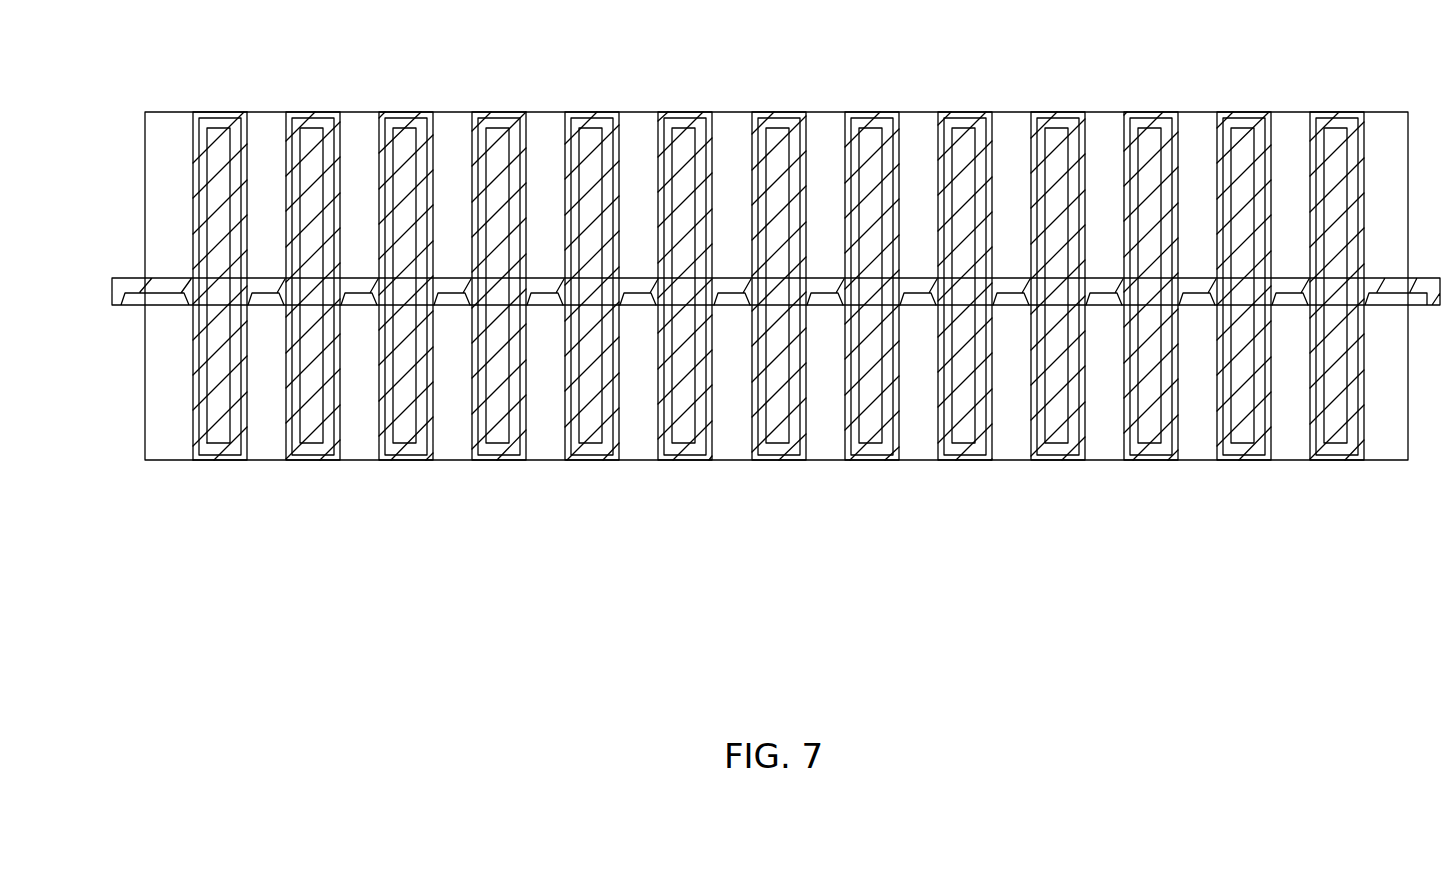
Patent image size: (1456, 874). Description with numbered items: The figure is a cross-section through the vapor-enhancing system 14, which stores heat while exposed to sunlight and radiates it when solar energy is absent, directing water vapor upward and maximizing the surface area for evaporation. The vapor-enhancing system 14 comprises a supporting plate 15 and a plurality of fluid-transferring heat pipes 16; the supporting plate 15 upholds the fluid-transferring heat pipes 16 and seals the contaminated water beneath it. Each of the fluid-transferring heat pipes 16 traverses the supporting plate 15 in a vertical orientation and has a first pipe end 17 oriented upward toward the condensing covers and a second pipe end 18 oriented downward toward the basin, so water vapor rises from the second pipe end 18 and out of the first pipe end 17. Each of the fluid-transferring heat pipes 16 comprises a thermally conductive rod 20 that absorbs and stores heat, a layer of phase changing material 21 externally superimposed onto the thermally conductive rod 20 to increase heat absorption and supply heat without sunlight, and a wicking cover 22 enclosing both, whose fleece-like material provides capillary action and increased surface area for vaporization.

The vapor-enhancing system 14 is at (118, 136).
The supporting plate 15 is at (112, 305).
The fluid-transferring heat pipe 16 is at (231, 281).
The first pipe end 17 is at (194, 111).
The second pipe end 18 is at (250, 461).
The thermally conductive rod 20 is at (242, 309).
The layer of phase changing material 21 is at (216, 446).
The wicking cover 22 is at (223, 117).